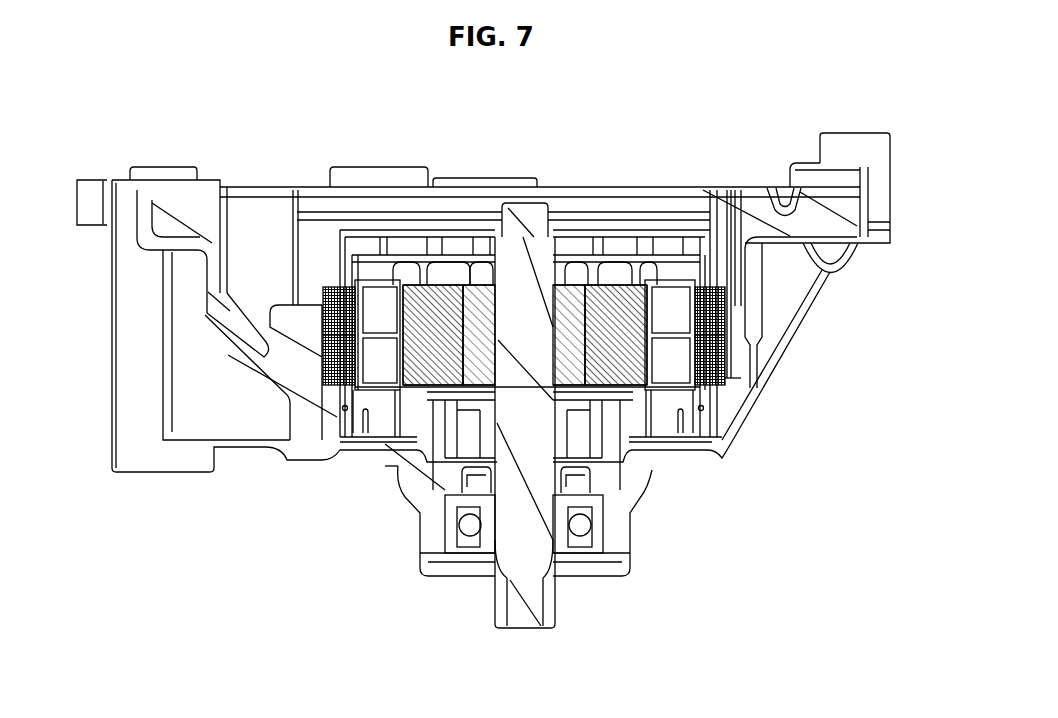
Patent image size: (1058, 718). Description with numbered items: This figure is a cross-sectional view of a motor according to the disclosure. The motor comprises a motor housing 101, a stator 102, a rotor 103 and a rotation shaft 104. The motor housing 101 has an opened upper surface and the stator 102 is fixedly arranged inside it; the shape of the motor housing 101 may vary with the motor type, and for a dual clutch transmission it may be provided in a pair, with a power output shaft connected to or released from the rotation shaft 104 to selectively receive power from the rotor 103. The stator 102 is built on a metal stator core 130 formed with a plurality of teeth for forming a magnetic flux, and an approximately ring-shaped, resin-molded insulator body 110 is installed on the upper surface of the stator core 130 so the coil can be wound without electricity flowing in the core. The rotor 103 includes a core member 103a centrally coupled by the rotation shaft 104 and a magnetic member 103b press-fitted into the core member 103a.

The motor housing 101 is at (762, 298).
The stator 102 is at (724, 368).
The rotor 103 is at (760, 530).
The core member 103a is at (573, 380).
The magnetic member 103b is at (633, 380).
The rotation shaft 104 is at (518, 613).
The insulator body 110 is at (613, 272).
The stator core 130 is at (338, 388).